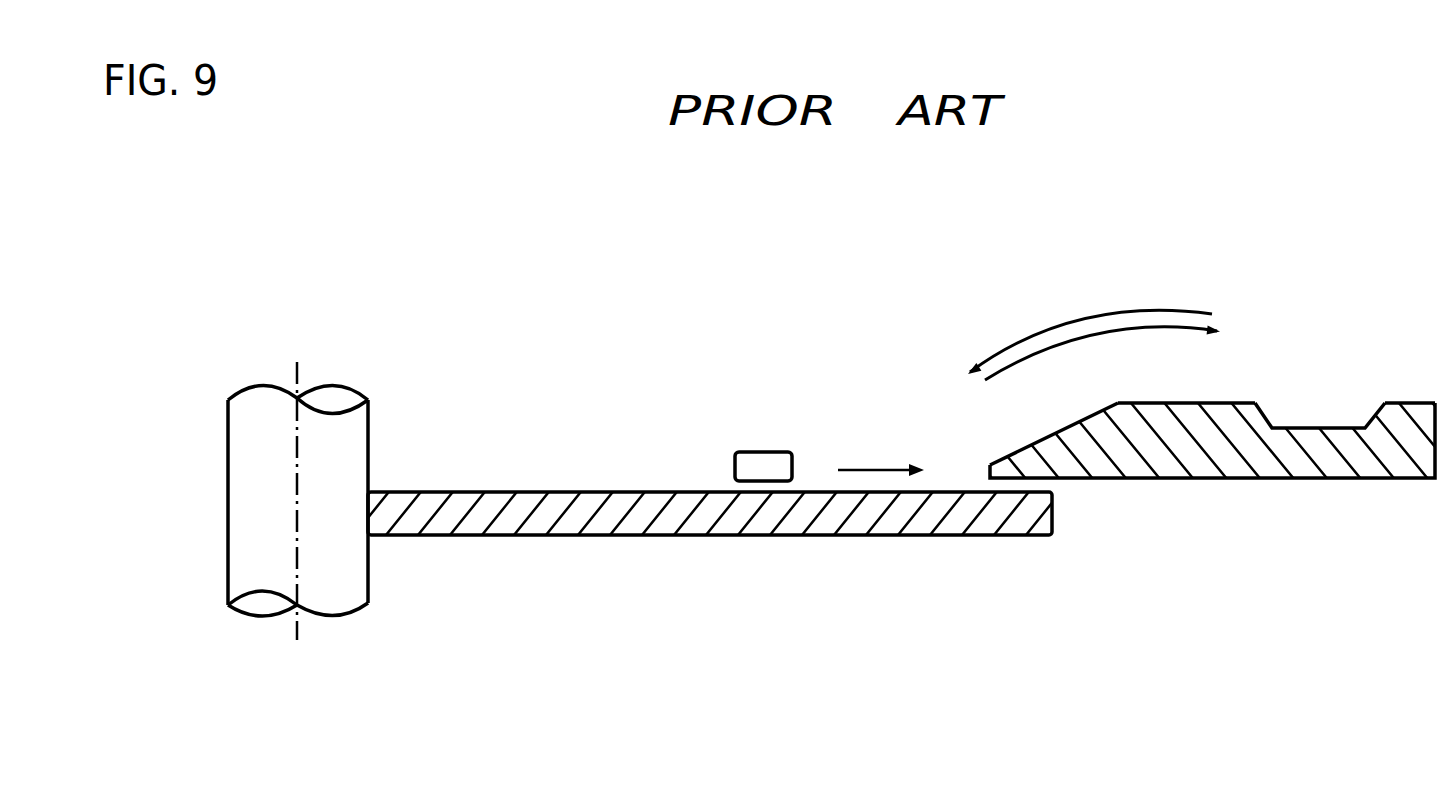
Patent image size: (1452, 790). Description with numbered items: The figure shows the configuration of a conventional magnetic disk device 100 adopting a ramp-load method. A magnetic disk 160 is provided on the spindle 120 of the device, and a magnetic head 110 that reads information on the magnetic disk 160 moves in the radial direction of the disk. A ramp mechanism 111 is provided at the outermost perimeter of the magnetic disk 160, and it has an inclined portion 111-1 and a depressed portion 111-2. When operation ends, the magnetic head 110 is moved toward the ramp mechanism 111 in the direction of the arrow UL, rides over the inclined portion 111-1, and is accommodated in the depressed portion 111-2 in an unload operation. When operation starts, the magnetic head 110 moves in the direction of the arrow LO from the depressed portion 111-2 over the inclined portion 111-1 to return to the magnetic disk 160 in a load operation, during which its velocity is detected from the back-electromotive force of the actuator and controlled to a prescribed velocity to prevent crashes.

The prior art head loading/unloading mechanism 100 is at (287, 206).
The magnetic head 110 is at (763, 458).
The ramp mechanism 111 is at (1157, 464).
The inclined portion 111-1 is at (1050, 435).
The depressed portion 111-2 is at (1335, 428).
The spindle 120 is at (345, 600).
The magnetic disk 160 is at (877, 536).